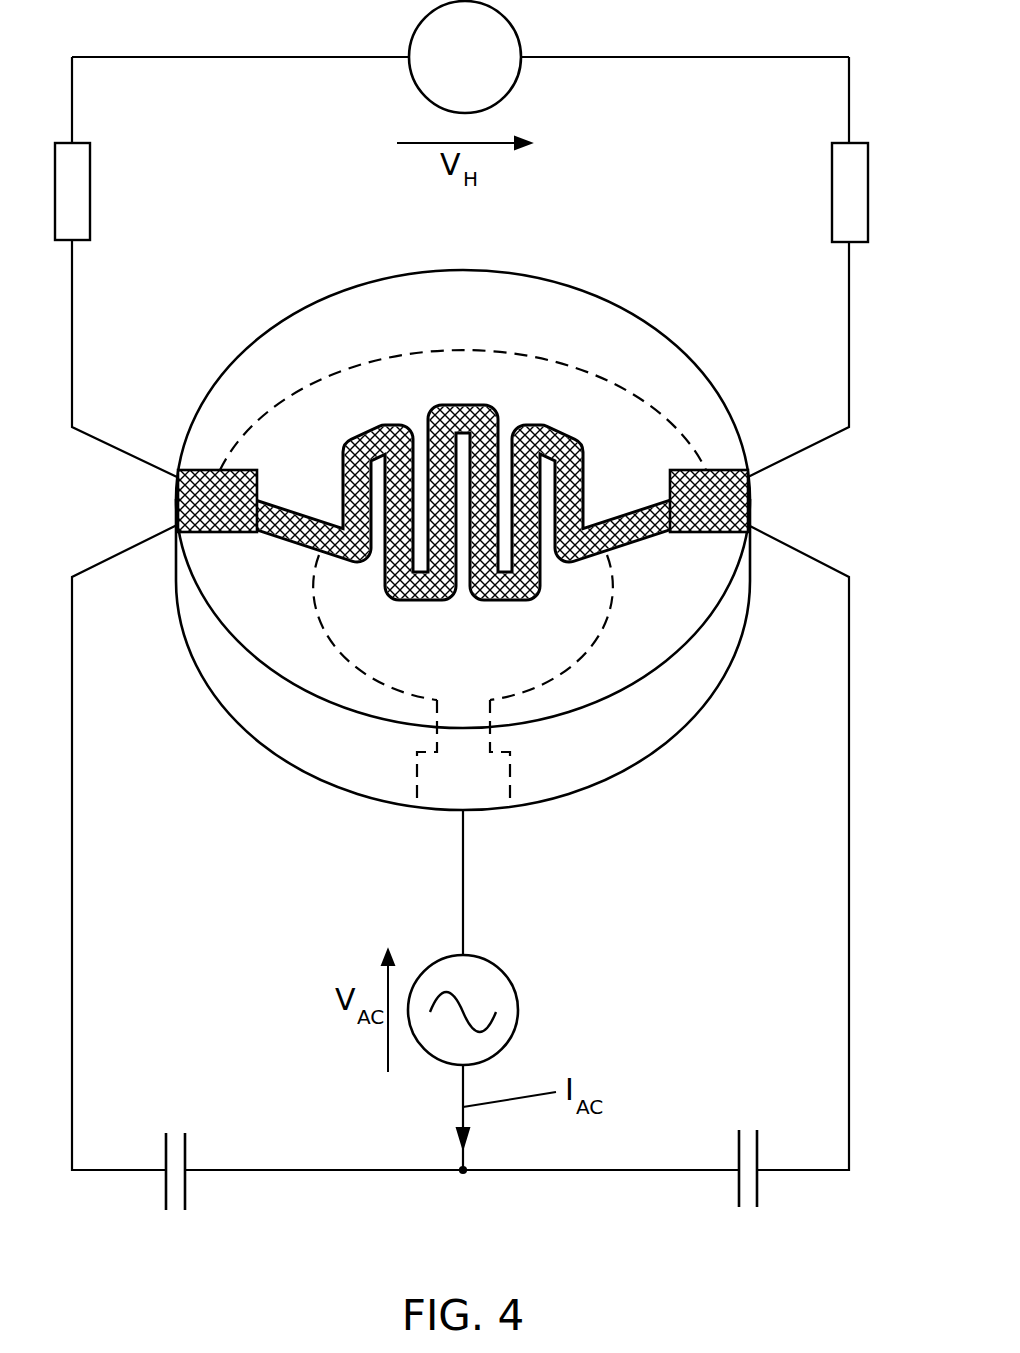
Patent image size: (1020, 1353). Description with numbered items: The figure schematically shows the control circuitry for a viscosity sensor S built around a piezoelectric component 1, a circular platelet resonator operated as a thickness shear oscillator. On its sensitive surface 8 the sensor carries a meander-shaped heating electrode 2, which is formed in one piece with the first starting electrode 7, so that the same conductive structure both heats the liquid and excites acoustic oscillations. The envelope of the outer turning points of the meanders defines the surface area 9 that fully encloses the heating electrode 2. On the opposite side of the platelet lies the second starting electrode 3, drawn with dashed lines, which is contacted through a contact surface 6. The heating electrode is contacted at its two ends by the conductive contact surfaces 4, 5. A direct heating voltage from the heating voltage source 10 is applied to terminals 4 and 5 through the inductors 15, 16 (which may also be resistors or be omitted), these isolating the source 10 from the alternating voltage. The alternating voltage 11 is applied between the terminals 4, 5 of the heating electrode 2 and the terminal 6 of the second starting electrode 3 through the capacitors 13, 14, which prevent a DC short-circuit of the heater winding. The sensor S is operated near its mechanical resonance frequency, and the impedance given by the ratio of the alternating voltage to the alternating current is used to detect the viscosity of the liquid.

The piezoelectric component 1 is at (371, 278).
The heating electrode 2 is at (432, 410).
The second starting electrode 3 is at (548, 683).
The contact surface 4 is at (732, 468).
The contact surface 5 is at (185, 457).
The contact surface 6 is at (485, 790).
The first starting electrode 7 is at (370, 447).
The sensitive surface 8 is at (683, 398).
The surface area 9 is at (383, 550).
The heating voltage source 10 is at (415, 93).
The alternating voltage 11 is at (510, 978).
The capacitor 13 is at (188, 1150).
The capacitor 14 is at (737, 1150).
The inductor 15 is at (90, 187).
The inductor 16 is at (832, 190).
The sensor S is at (228, 757).